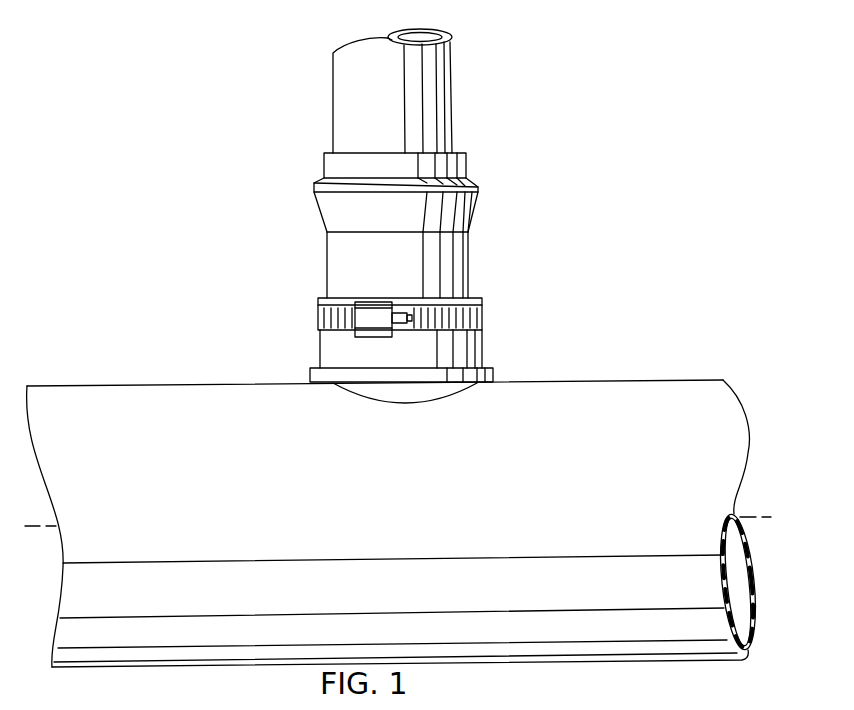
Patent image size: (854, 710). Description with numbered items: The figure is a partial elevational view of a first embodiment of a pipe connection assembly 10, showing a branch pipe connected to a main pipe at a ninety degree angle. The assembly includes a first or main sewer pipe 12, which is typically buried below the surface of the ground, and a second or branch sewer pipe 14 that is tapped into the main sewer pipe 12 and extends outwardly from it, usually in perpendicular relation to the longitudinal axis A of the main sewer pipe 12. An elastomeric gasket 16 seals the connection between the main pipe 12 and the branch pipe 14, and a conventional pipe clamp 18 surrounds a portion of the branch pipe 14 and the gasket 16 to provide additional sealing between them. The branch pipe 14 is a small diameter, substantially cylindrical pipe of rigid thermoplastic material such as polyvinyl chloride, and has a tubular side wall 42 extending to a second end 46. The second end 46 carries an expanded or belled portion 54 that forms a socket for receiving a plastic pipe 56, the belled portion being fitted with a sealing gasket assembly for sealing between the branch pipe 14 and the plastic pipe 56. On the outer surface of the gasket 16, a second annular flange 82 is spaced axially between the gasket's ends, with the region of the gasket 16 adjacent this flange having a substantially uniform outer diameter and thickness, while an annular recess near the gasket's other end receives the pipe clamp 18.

The pipe connection assembly 10 is at (201, 276).
The main sewer pipe 12 is at (157, 384).
The branch sewer pipe 14 is at (326, 243).
The elastomeric gasket 16 is at (318, 349).
The pipe clamp 18 is at (317, 315).
The tubular side wall 42 is at (327, 267).
The second end 46 is at (324, 165).
The expanded or belled portion 54 is at (485, 185).
The plastic pipe 56 is at (333, 100).
The second annular flange 82 is at (310, 372).
The longitudinal axis A is at (765, 517).